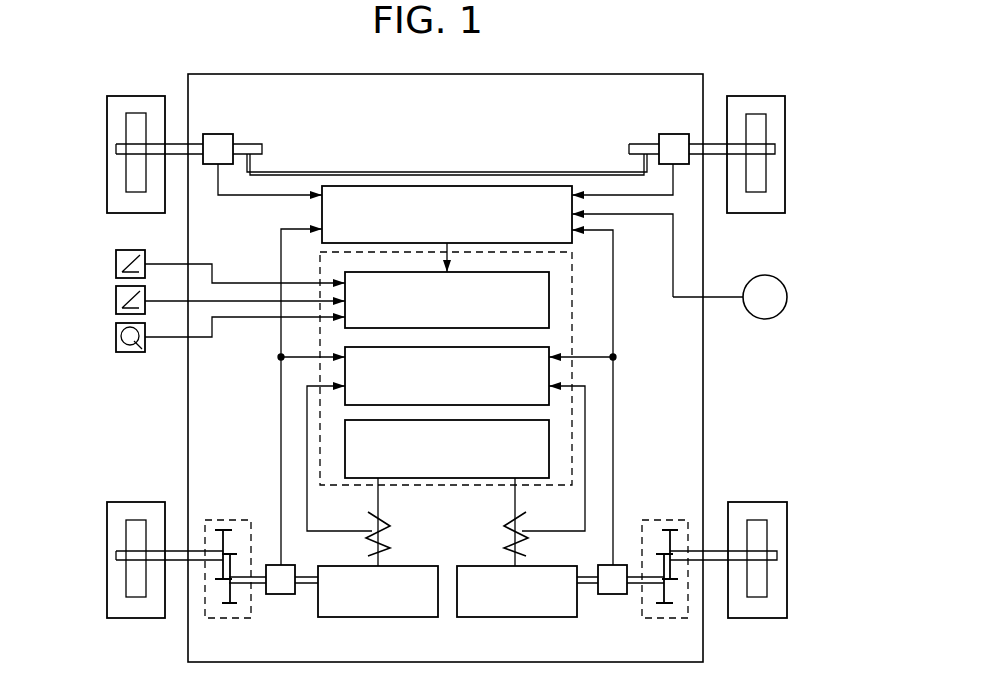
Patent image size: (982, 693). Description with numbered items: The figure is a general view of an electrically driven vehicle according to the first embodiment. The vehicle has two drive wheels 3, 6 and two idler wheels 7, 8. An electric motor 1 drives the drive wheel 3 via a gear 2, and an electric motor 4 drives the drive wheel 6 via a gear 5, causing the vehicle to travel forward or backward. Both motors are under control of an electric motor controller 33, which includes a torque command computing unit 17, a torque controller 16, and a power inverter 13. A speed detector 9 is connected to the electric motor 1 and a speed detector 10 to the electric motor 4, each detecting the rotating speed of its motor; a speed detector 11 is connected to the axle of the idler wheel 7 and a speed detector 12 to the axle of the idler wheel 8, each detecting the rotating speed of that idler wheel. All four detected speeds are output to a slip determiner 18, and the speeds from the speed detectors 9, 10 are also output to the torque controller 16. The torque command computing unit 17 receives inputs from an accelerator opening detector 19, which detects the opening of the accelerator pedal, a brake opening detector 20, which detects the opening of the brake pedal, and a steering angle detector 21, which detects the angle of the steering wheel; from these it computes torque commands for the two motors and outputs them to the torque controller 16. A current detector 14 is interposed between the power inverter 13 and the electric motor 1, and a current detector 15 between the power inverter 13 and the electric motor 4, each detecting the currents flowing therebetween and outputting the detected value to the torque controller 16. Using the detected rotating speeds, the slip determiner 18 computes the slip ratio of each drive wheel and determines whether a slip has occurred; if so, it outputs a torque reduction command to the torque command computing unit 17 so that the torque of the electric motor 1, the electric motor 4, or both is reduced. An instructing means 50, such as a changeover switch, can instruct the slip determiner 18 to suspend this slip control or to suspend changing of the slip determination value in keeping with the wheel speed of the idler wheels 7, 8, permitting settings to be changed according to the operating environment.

The electric motor 1 is at (378, 618).
The gear 2 is at (237, 520).
The drive wheel 3 is at (138, 502).
The electric motor 4 is at (516, 618).
The gear 5 is at (677, 520).
The drive wheel 6 is at (760, 502).
The idler wheel 7 is at (107, 121).
The idler wheel 8 is at (785, 121).
The speed detector 9 is at (279, 595).
The speed detector 10 is at (614, 595).
The speed detector 11 is at (218, 134).
The speed detector 12 is at (673, 134).
The power inverter 13 is at (485, 486).
The current detector 14 is at (372, 527).
The current detector 15 is at (518, 527).
The torque controller 16 is at (550, 348).
The torque command computing unit 17 is at (549, 297).
The slip determiner 18 is at (448, 185).
The accelerator opening detector 19 is at (114, 262).
The brake opening detector 20 is at (114, 298).
The steering angle detector 21 is at (114, 336).
The electric motor controller 33 is at (439, 486).
The instructing means 50 is at (787, 297).